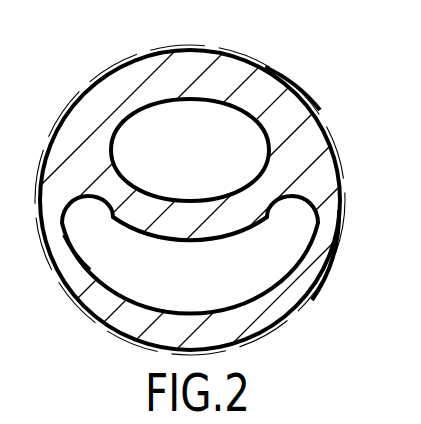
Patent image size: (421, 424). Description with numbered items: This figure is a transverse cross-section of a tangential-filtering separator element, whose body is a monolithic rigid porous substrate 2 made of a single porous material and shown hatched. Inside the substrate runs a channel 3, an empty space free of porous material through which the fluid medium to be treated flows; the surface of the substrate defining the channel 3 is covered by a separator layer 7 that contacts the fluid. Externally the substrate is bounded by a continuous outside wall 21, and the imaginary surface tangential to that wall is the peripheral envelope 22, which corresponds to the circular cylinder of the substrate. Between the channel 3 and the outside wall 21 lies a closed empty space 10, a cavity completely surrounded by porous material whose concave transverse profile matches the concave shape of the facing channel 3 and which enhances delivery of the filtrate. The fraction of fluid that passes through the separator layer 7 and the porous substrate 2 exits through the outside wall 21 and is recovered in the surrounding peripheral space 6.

The porous substrate 2 is at (305, 117).
The outside wall 21 is at (303, 96).
The peripheral envelope 22 is at (340, 242).
The peripheral space 6 is at (186, 44).
The empty space 10 is at (200, 160).
The channel 3 is at (182, 288).
The separator layer 7 is at (84, 265).